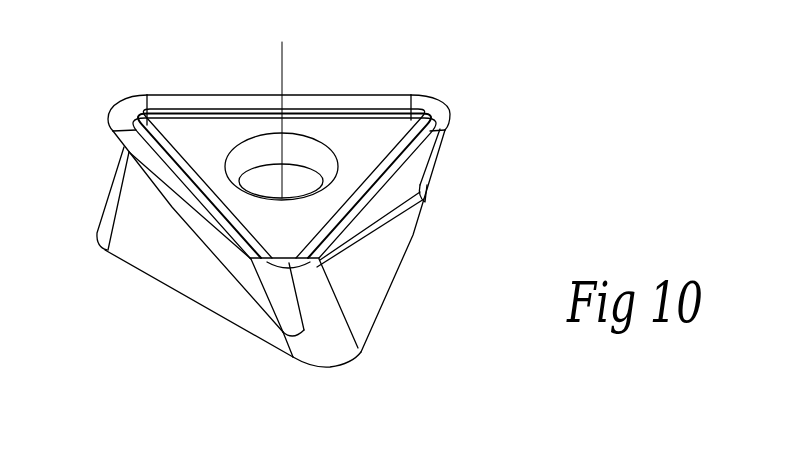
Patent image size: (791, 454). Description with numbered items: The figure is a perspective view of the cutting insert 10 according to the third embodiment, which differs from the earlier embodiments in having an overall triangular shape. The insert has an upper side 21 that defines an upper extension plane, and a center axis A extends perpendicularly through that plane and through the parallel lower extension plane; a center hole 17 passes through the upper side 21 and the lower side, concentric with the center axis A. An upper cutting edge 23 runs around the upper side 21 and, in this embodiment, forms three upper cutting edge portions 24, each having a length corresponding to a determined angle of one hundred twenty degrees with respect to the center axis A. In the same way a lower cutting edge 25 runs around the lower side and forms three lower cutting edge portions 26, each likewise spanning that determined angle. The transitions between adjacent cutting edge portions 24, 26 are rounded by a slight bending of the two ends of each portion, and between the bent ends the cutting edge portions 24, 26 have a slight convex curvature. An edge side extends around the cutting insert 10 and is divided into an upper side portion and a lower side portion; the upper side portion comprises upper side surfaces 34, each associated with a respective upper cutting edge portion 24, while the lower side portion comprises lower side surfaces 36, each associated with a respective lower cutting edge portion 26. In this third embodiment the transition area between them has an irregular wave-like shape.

The cutting insert 10 is at (512, 120).
The center hole 17 is at (291, 182).
The upper side 21 is at (352, 142).
The upper cutting edge 23 is at (443, 97).
The upper cutting edge portion 24 is at (178, 95).
The lower cutting edge 25 is at (330, 368).
The lower cutting edge portion 26 is at (180, 297).
The upper side surface 34 is at (407, 181).
The lower side surface 36 is at (363, 288).
The center axis A is at (282, 62).